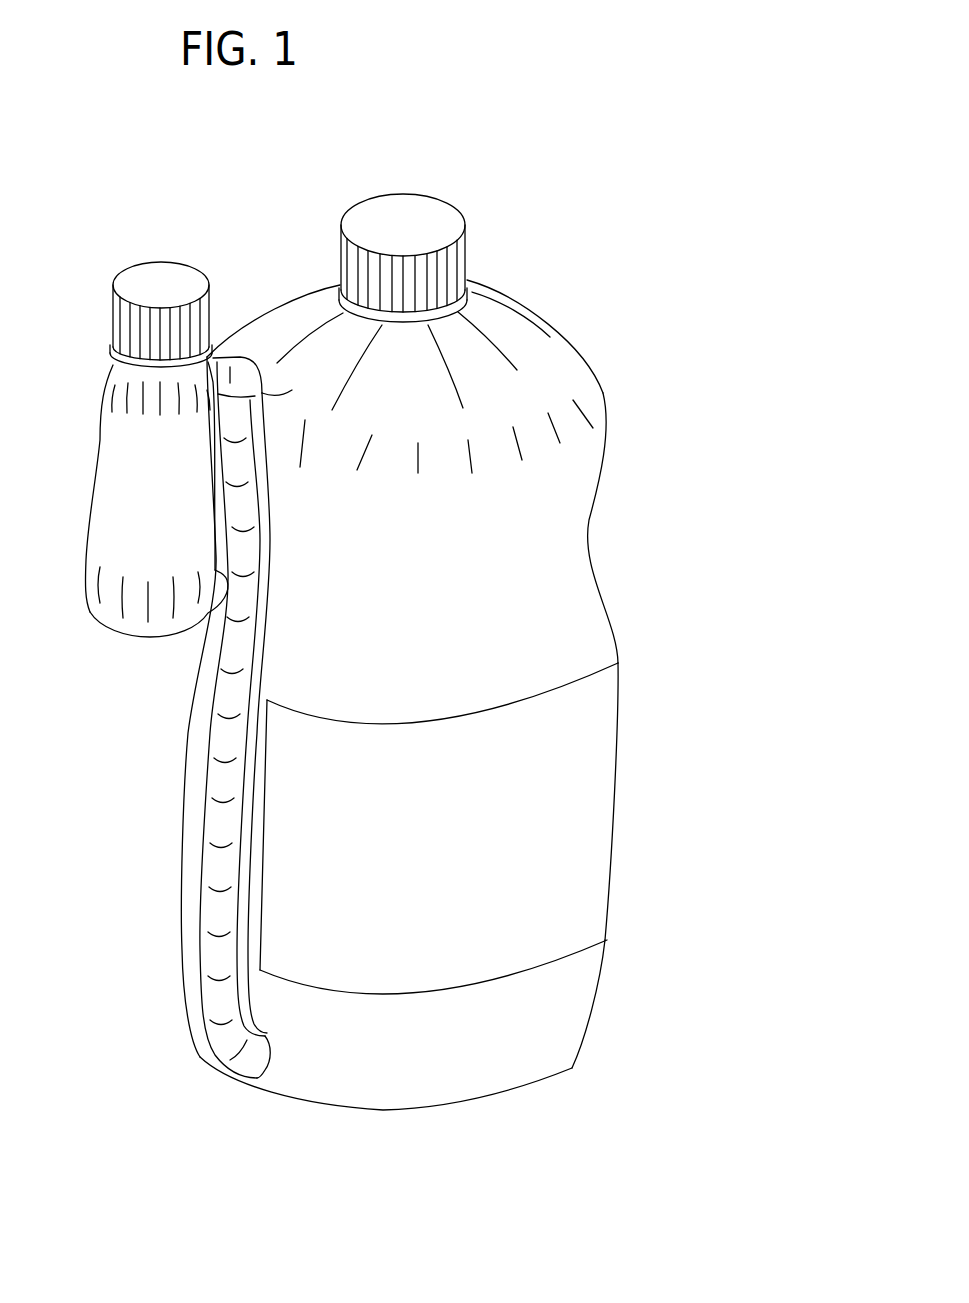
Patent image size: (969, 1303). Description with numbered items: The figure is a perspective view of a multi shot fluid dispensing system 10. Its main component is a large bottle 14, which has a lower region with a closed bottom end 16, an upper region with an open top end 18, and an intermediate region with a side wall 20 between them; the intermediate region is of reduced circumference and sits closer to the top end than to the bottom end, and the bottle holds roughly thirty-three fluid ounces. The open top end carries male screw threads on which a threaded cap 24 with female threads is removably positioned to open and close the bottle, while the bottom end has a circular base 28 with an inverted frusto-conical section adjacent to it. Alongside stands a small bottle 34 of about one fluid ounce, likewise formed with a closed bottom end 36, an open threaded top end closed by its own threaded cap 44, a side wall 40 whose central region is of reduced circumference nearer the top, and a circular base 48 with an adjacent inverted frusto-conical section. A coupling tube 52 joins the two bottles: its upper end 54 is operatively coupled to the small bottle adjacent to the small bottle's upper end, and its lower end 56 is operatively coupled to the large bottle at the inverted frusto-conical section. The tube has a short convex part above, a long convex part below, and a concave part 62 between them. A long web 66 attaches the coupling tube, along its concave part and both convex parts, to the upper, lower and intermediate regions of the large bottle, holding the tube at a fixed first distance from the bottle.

The multi shot fluid dispensing system 10 is at (632, 93).
The large bottle 14 is at (458, 647).
The closed bottom end 16 is at (572, 1068).
The open top end 18 is at (563, 355).
The side wall 20 is at (618, 663).
The threaded cap 24 is at (438, 240).
The circular base 28 is at (292, 1082).
The small bottle 34 is at (193, 478).
The closed bottom end 36 is at (152, 638).
The side wall 40 is at (100, 450).
The threaded cap 44 is at (192, 300).
The circular base 48 is at (110, 608).
The coupling tube 52 is at (217, 740).
The upper end 54 is at (258, 333).
The lower end 56 is at (220, 1042).
The concave part 62 is at (590, 527).
The long web 66 is at (265, 422).